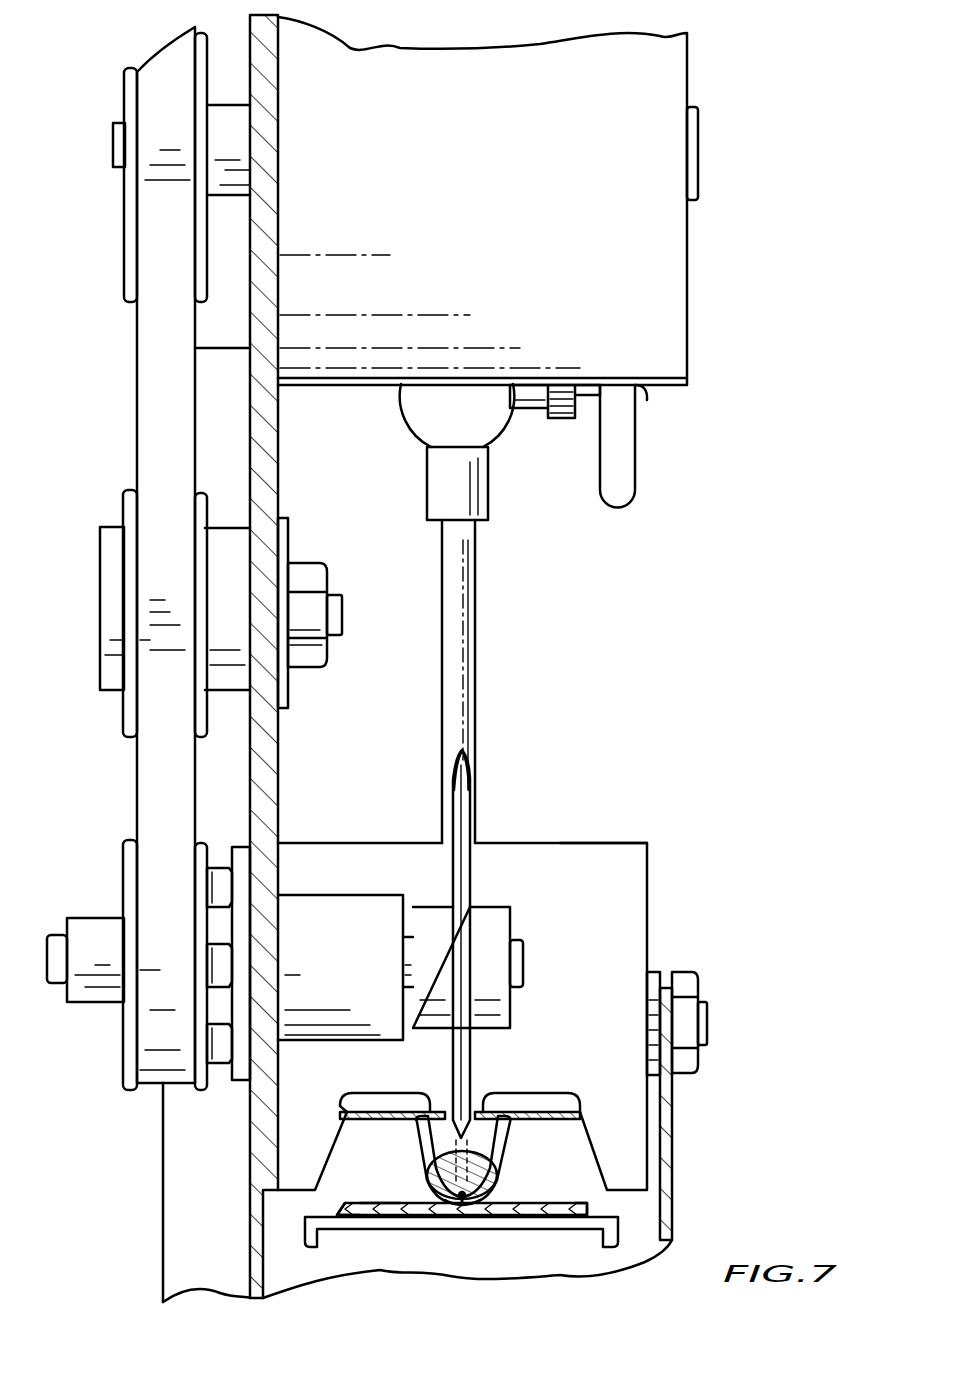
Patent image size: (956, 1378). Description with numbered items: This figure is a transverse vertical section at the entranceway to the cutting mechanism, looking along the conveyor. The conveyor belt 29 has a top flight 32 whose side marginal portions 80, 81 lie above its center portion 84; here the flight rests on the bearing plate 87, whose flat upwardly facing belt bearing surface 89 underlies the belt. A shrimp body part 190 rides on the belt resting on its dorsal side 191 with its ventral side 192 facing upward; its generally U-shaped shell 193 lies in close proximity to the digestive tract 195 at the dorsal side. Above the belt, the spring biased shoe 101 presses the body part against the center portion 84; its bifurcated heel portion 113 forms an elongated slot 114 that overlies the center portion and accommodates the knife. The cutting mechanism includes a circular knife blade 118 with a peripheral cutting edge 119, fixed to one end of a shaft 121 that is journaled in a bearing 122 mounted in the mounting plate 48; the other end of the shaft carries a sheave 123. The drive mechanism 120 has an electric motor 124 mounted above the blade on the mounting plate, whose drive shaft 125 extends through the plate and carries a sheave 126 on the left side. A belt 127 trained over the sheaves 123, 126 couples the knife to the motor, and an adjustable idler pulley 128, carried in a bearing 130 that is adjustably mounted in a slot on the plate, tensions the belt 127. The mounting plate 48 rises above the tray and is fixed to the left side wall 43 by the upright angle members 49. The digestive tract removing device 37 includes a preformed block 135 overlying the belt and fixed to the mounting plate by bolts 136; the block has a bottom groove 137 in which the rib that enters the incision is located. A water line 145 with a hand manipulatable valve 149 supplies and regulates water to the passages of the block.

The conveyor belt 29 is at (528, 1203).
The top flight 32 is at (557, 1203).
The digestive tract removing device 37 is at (650, 855).
The left side wall 43 is at (250, 1226).
The mounting plate 48 is at (278, 740).
The angle members 49 is at (163, 1136).
The side marginal portion 80 is at (384, 1185).
The side marginal portion 81 is at (567, 1203).
The center portion 84 is at (443, 1214).
The bearing plate 87 is at (337, 1228).
The belt bearing surface 89 is at (362, 1203).
The shoe 101 is at (347, 1096).
The heel portion 113 is at (500, 1098).
The elongated slot 114 is at (452, 1098).
The knife blade 118 is at (471, 1057).
The cutting edge 119 is at (463, 803).
The drive mechanism 120 is at (123, 855).
The shaft 121 is at (523, 950).
The bearing 122 is at (333, 895).
The sheave 123 is at (123, 890).
The electric motor 124 is at (688, 366).
The drive shaft 125 is at (113, 141).
The sheave 126 is at (125, 283).
The belt 127 is at (137, 397).
The adjustable idler pulley 128 is at (120, 710).
The bearing 130 is at (225, 527).
The preformed block 135 is at (574, 843).
The bolts 136 is at (700, 976).
The bottom groove 137 is at (392, 1098).
The water line 145 is at (477, 690).
The valve 149 is at (636, 482).
The shrimp body part 190 is at (512, 1145).
The dorsal side 191 is at (468, 1201).
The ventral side 192 is at (436, 1138).
The shell 193 is at (500, 1172).
The digestive tract 195 is at (440, 1214).